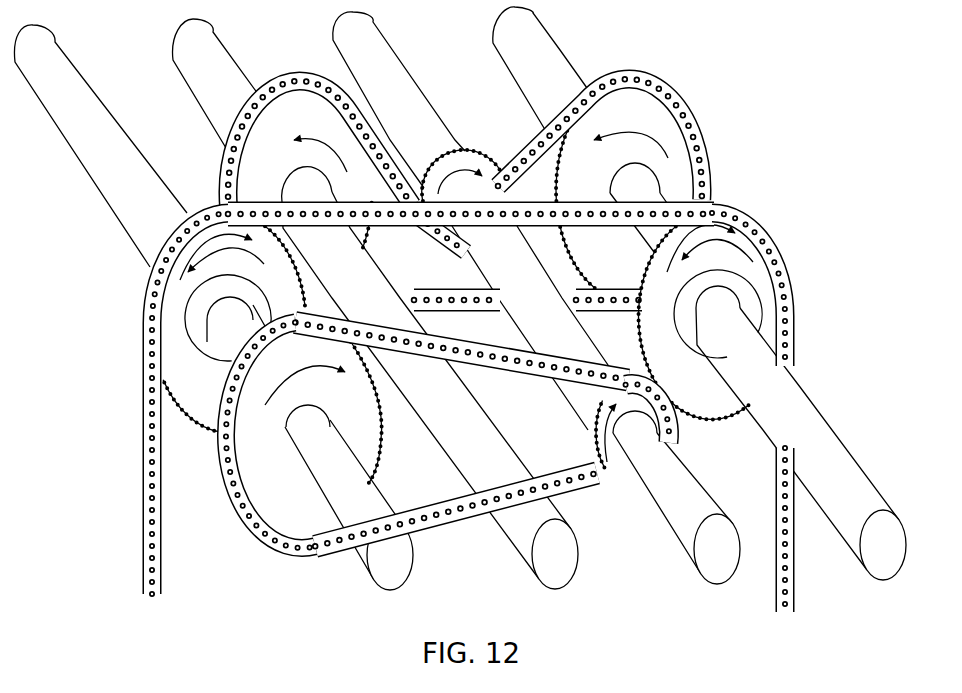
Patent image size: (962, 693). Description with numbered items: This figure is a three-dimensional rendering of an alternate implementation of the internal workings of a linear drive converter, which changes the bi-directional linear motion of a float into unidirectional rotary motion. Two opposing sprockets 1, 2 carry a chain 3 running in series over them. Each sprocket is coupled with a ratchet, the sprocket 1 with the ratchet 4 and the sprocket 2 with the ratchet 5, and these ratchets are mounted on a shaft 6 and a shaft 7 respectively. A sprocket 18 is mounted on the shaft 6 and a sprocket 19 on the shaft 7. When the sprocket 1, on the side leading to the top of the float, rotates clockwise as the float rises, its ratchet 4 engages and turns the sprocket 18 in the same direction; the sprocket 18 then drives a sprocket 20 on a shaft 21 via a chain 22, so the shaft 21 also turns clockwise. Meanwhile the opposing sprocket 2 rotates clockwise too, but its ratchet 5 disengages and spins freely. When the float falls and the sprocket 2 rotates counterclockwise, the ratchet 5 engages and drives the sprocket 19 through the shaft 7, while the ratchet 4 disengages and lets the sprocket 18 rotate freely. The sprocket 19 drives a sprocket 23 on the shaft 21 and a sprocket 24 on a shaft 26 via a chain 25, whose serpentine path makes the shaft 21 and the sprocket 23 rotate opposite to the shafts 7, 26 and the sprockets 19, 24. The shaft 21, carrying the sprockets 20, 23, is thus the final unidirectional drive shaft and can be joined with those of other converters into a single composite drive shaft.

The sprocket 1 is at (194, 387).
The sprocket 2 is at (701, 398).
The chain 3 is at (126, 521).
The ratchet 4 is at (208, 330).
The ratchet 5 is at (693, 319).
The shaft 6 is at (401, 564).
The shaft 7 is at (892, 556).
The sprocket 18 is at (303, 514).
The sprocket 19 is at (617, 255).
The sprocket 20 is at (584, 431).
The shaft 21 is at (733, 561).
The chain 22 is at (453, 537).
The sprocket 23 is at (468, 140).
The sprocket 24 is at (275, 194).
The chain 25 is at (524, 150).
The shaft 26 is at (570, 562).